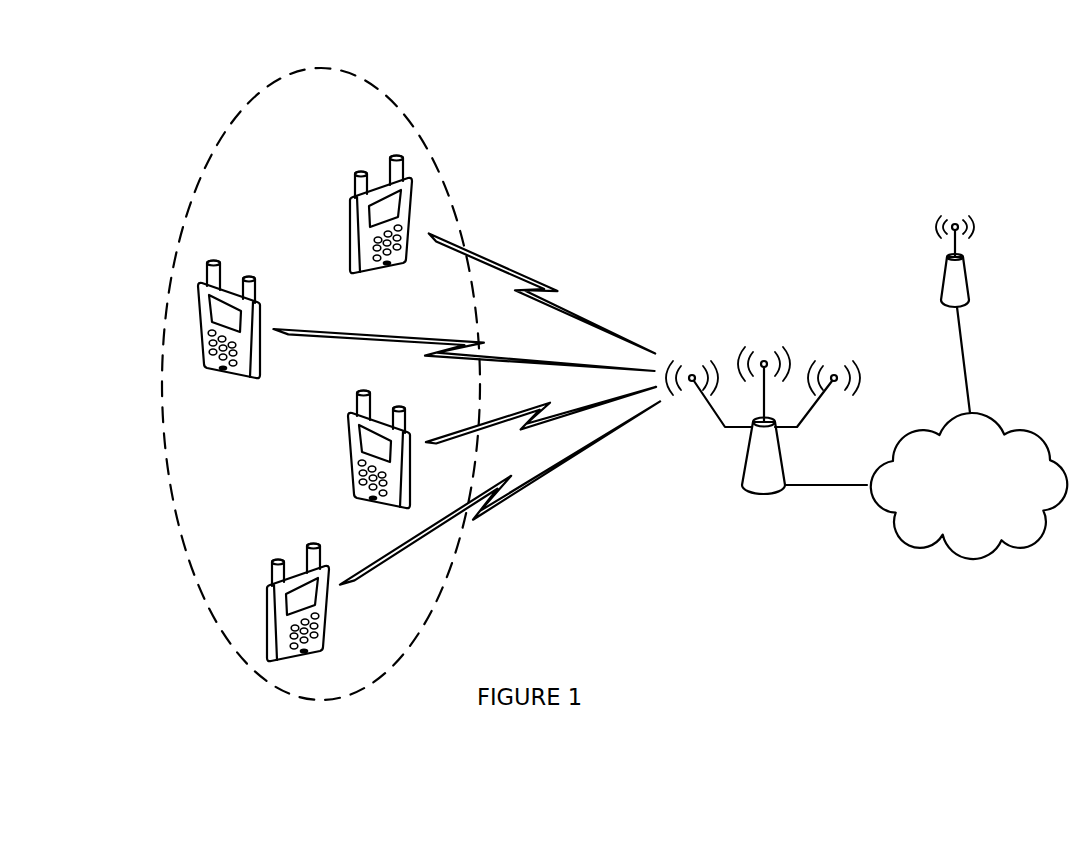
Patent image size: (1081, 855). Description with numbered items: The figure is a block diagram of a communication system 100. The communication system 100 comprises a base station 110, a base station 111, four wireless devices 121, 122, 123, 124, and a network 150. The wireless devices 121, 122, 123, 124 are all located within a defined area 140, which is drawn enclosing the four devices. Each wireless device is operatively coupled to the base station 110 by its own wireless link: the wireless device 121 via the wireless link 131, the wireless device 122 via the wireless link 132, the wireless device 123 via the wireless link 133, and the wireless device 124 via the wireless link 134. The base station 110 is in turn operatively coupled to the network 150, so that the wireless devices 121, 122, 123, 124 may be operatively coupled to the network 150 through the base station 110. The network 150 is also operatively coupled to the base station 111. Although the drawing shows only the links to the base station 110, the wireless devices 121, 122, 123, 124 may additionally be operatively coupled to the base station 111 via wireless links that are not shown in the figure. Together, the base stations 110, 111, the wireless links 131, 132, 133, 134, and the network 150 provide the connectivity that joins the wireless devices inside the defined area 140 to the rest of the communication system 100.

The communication system 100 is at (670, 97).
The base station 110 is at (755, 497).
The base station 111 is at (948, 308).
The wireless device 121 is at (360, 277).
The wireless device 122 is at (383, 513).
The wireless device 123 is at (248, 382).
The wireless device 124 is at (317, 657).
The wireless link 131 is at (602, 327).
The wireless link 132 is at (587, 403).
The wireless link 133 is at (573, 358).
The wireless link 134 is at (557, 460).
The defined area 140 is at (235, 649).
The network 150 is at (953, 511).